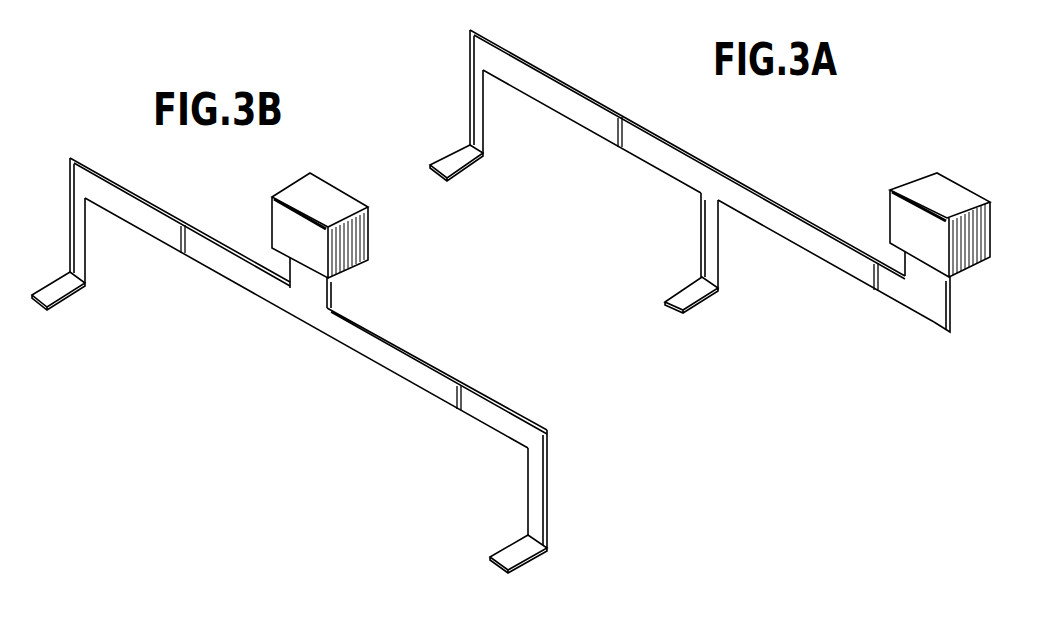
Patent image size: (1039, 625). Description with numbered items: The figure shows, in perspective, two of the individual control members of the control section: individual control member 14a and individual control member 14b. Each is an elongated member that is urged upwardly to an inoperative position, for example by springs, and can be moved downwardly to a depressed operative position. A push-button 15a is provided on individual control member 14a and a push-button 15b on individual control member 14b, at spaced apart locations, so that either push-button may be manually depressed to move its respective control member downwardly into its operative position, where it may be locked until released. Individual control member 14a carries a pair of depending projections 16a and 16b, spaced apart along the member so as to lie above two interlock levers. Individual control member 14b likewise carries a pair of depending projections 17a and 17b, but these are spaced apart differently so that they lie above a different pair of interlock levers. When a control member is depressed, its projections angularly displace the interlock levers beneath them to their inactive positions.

In FIG. 3A, the individual control member 14a is at (645, 137).
In FIG. 3B, the individual control member 14b is at (412, 366).
In FIG. 3A, the push-button 15a is at (926, 188).
In FIG. 3B, the push-button 15b is at (334, 200).
In FIG. 3A, the depending projection 16a is at (445, 170).
In FIG. 3A, the depending projection 16b is at (687, 305).
In FIG. 3B, the depending projection 17a is at (63, 284).
In FIG. 3B, the depending projection 17b is at (520, 547).